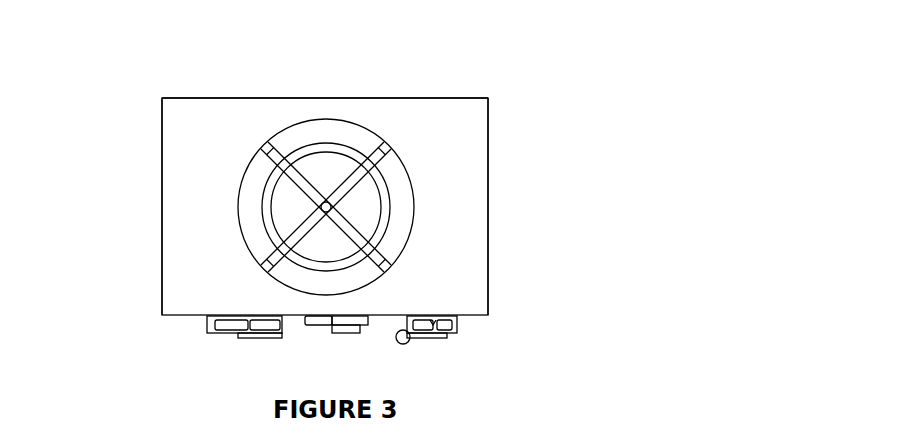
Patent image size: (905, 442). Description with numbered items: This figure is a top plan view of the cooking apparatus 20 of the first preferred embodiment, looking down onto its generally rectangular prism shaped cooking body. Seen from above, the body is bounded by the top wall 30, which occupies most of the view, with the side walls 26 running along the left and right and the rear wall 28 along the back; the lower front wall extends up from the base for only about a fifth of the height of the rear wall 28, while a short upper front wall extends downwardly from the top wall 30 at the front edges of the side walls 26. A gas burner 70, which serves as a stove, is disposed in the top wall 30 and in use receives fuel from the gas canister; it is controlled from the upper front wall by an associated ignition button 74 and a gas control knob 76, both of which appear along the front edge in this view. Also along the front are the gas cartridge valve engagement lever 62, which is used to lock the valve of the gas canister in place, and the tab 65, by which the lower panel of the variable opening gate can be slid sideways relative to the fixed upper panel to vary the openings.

The cooking apparatus 20 is at (729, 170).
The side walls 26 is at (162, 182).
The rear wall 28 is at (220, 98).
The top wall 30 is at (473, 125).
The gas cartridge valve engagement lever 62 is at (255, 338).
The tab 65 is at (410, 341).
The gas burner 70 is at (348, 135).
The ignition button 74 is at (358, 333).
The gas control knob 76 is at (457, 323).